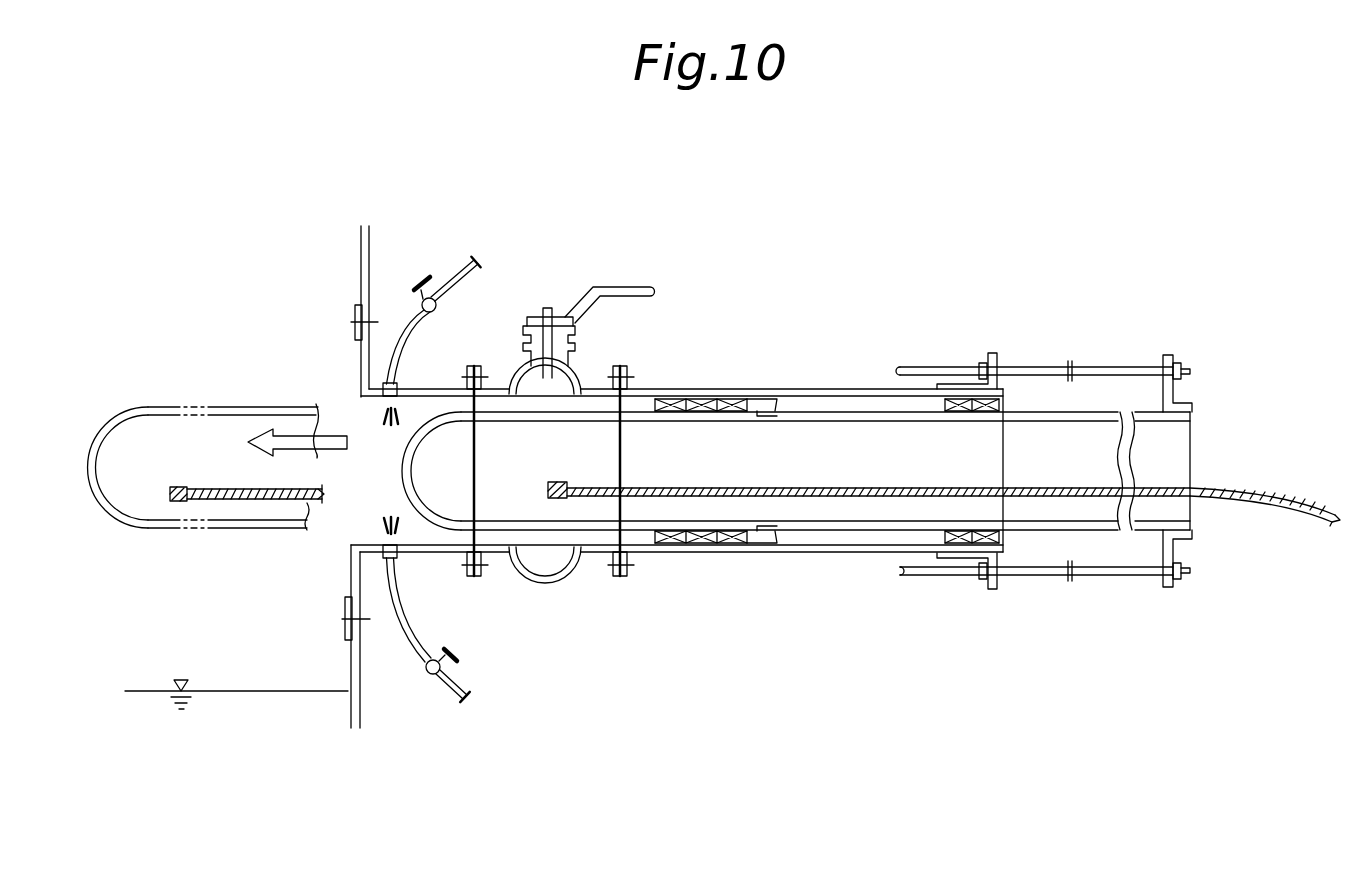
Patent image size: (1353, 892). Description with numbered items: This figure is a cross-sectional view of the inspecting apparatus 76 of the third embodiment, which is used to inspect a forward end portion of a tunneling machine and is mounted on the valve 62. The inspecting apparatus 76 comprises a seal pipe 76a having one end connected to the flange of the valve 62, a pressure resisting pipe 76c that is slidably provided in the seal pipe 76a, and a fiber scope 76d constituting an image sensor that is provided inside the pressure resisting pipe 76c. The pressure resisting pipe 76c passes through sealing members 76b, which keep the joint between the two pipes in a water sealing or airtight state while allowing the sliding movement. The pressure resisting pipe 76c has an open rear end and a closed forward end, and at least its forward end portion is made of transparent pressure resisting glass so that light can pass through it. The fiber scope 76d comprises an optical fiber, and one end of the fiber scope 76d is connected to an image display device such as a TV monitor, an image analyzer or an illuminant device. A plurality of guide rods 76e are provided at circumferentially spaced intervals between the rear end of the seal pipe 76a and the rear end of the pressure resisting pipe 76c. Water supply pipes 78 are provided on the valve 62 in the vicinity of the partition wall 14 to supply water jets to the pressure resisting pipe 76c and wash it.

The partition wall 14 is at (361, 250).
The valve 62 is at (537, 317).
The inspecting apparatus 76 is at (752, 389).
The seal pipe 76a is at (870, 389).
The sealing members 76b is at (674, 398).
The pressure resisting pipe 76c is at (782, 396).
The fiber scope 76d is at (558, 498).
The guide rods 76e is at (1050, 366).
The water supply pipes 78 is at (467, 273).